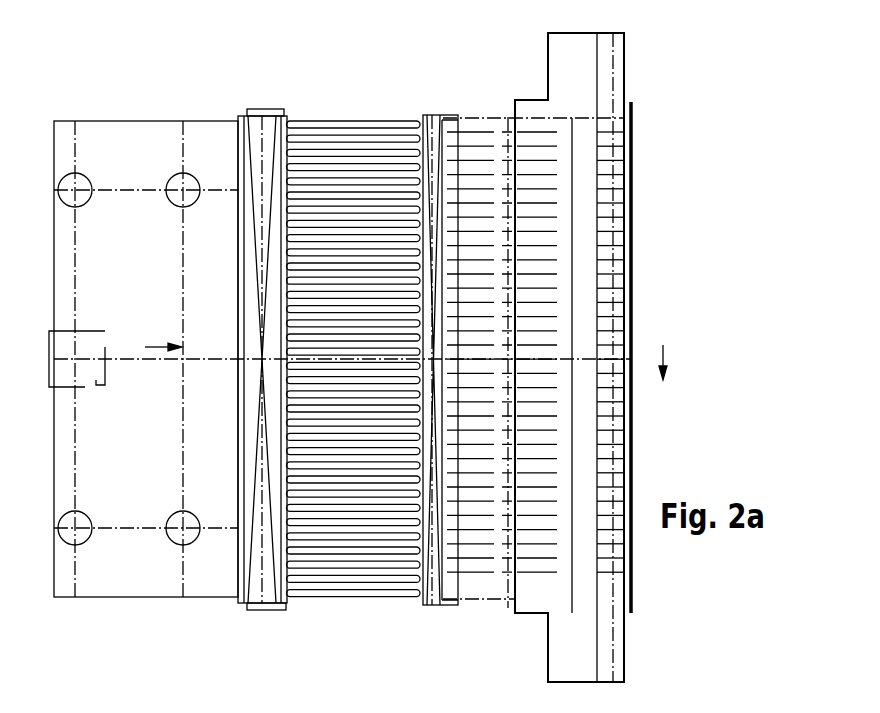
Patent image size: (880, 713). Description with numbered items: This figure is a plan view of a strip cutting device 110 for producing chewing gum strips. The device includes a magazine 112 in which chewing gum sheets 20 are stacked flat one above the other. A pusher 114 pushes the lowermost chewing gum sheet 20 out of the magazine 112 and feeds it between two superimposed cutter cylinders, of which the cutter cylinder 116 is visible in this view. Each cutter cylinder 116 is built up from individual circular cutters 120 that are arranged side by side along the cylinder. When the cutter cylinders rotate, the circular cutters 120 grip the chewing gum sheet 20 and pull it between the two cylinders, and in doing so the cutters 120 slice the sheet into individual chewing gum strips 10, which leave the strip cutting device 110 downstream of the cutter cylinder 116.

The chewing gum strip 10 is at (620, 253).
The chewing gum sheet 20 is at (272, 108).
The strip cutting device 110 is at (378, 621).
The magazine 112 is at (251, 109).
The pusher 114 is at (329, 125).
The cutter cylinder 116 is at (506, 606).
The circular cutter 120 is at (490, 130).